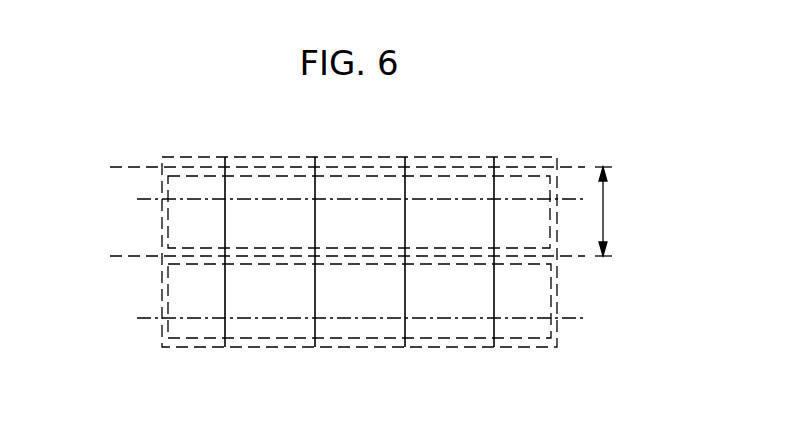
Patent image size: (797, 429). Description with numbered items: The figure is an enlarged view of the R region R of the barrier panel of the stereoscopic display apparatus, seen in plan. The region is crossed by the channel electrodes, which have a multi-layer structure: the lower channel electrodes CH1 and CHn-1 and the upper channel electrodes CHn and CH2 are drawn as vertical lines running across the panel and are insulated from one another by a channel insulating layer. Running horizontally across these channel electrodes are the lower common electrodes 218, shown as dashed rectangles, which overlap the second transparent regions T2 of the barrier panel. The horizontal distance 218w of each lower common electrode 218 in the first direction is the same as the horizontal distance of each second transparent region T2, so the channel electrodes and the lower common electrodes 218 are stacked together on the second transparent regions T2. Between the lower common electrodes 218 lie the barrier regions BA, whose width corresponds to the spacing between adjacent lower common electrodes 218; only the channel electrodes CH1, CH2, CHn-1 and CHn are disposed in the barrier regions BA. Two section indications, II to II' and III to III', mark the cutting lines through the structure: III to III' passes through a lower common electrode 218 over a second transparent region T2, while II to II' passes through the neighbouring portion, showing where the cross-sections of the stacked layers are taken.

The lower common electrode 218 is at (100, 167).
The horizontal distance of lower common electrode 218w is at (626, 211).
The second transparent region T2 is at (168, 223).
The barrier region BA is at (553, 290).
The R region R is at (452, 348).
The lower channel electrode CHn-1 is at (196, 172).
The upper channel electrode CHn is at (285, 172).
The lower channel electrode CH1 is at (378, 172).
The upper channel electrode CH2 is at (454, 172).
The section line II is at (147, 362).
The section line II' is at (575, 362).
The section line III is at (146, 156).
The section line III' is at (574, 156).